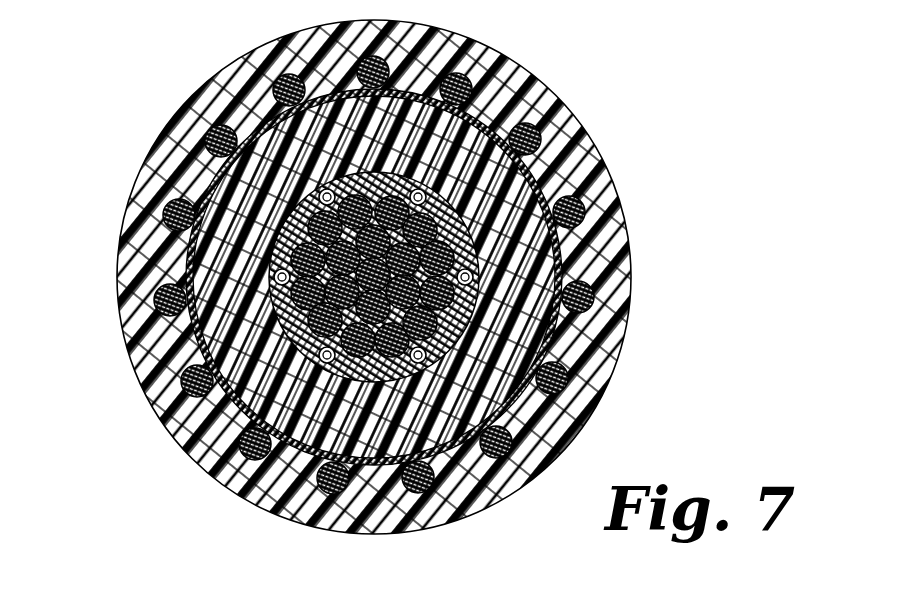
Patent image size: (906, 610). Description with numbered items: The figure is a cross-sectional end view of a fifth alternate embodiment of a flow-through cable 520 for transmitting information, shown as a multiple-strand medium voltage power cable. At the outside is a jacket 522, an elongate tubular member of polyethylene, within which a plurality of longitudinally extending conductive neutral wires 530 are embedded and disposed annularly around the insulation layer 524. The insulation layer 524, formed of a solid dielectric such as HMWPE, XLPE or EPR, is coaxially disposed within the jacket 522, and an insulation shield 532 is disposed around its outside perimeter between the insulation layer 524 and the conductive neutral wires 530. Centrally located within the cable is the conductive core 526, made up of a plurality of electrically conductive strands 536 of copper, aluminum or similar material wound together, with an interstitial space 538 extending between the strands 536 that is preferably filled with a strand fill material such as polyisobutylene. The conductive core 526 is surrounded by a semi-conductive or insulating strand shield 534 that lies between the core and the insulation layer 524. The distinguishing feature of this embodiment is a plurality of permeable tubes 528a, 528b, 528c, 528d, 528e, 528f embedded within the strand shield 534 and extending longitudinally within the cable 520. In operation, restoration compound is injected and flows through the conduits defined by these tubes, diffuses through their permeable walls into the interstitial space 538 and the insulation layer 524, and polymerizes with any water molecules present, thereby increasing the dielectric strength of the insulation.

The cable 520 is at (391, 294).
The jacket 522 is at (596, 143).
The insulation layer 524 is at (232, 340).
The conductive core 526 is at (447, 277).
The permeable tube 528a is at (327, 188).
The permeable tube 528b is at (419, 188).
The permeable tube 528c is at (474, 275).
The permeable tube 528d is at (425, 361).
The permeable tube 528e is at (325, 365).
The permeable tube 528f is at (273, 275).
The conductive neutral wires 530 is at (165, 205).
The insulation shield 532 is at (262, 145).
The strand shield 534 is at (448, 328).
The conductive strands 536 is at (366, 385).
The interstitial space 538 is at (243, 400).